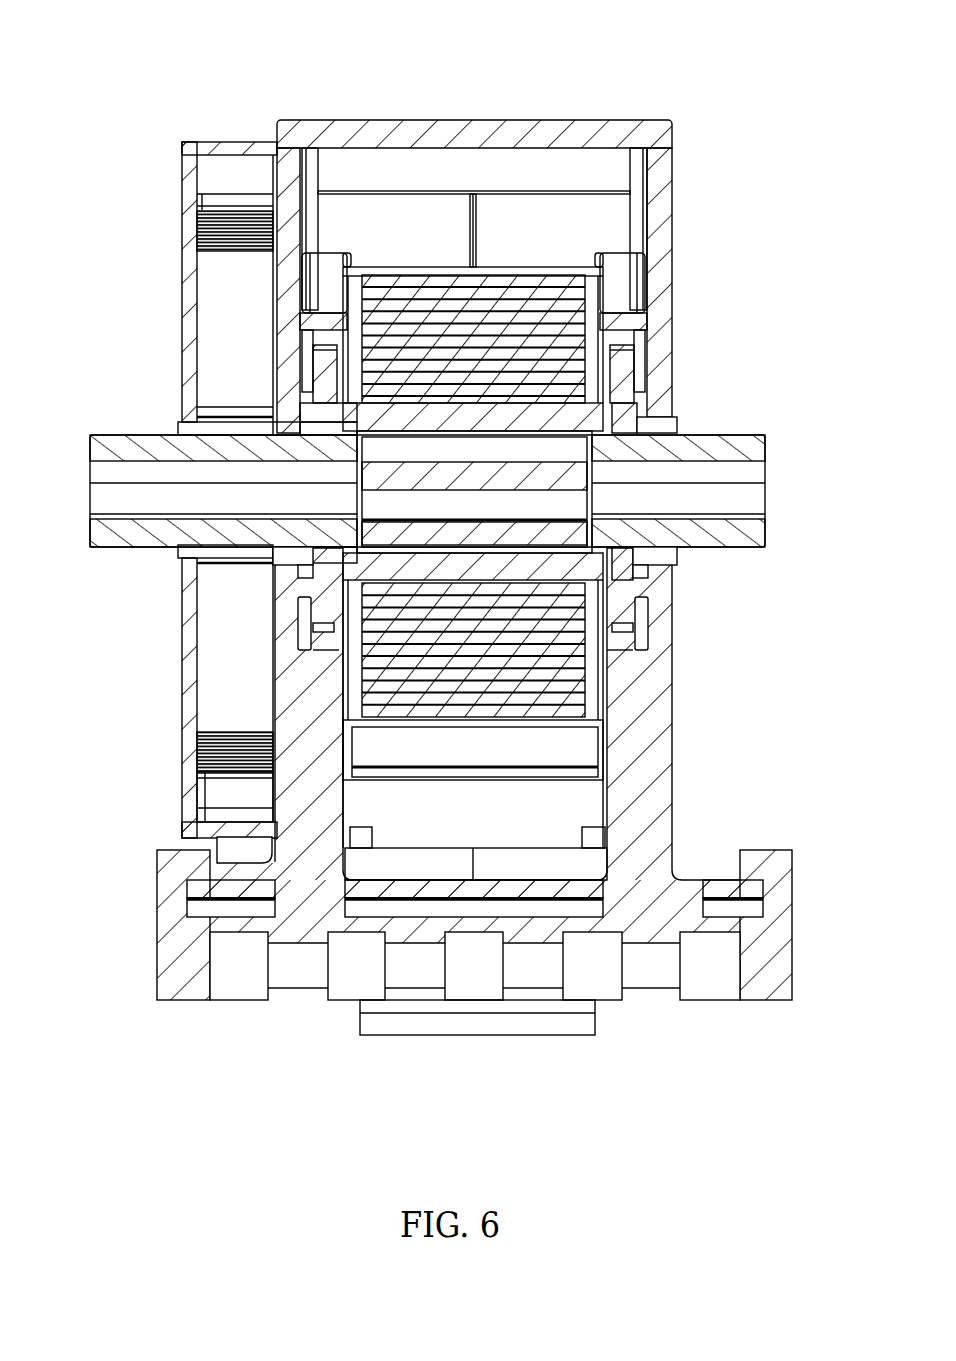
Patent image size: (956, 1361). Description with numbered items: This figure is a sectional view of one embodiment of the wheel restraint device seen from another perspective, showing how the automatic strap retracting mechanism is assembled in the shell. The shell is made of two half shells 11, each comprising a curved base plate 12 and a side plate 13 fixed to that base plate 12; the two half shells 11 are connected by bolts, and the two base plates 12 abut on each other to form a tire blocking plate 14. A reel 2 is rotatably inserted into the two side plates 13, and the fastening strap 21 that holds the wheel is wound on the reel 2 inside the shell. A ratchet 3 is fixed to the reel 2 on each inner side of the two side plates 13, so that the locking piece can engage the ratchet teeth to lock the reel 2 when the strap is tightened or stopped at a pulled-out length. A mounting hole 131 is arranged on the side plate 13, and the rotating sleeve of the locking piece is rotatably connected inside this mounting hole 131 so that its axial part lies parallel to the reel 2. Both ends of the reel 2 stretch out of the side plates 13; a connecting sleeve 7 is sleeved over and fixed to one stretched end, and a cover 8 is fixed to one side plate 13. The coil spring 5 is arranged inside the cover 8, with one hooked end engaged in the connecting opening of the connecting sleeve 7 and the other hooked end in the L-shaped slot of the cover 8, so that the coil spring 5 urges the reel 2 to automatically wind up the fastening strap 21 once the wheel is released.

The reel 2 is at (127, 447).
The ratchet 3 is at (325, 377).
The coil spring 5 is at (227, 234).
The connecting sleeve 7 is at (218, 555).
The cover 8 is at (190, 282).
The half shell 11 is at (254, 697).
The base plate 12 is at (384, 890).
The side plate 13 is at (313, 773).
The tire blocking plate 14 is at (466, 908).
The fastening strap 21 is at (497, 338).
The mounting hole 131 is at (289, 573).